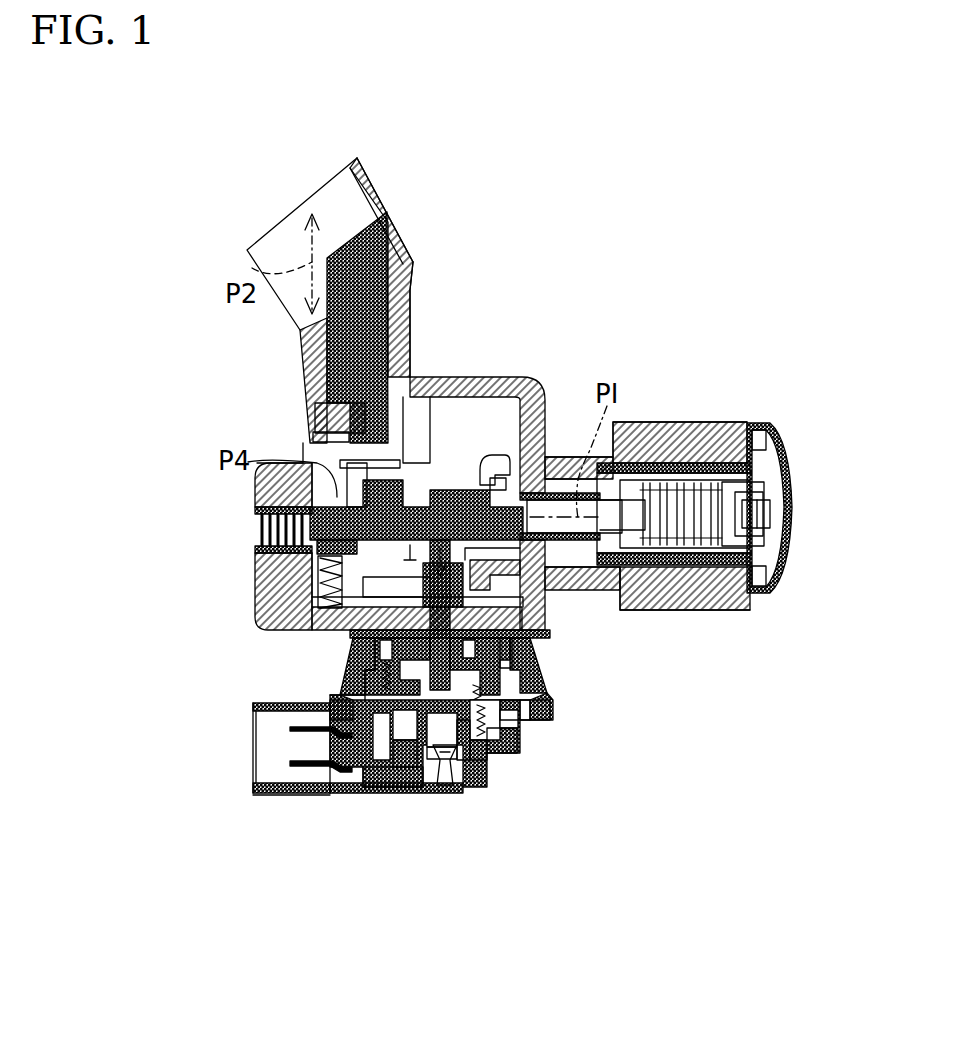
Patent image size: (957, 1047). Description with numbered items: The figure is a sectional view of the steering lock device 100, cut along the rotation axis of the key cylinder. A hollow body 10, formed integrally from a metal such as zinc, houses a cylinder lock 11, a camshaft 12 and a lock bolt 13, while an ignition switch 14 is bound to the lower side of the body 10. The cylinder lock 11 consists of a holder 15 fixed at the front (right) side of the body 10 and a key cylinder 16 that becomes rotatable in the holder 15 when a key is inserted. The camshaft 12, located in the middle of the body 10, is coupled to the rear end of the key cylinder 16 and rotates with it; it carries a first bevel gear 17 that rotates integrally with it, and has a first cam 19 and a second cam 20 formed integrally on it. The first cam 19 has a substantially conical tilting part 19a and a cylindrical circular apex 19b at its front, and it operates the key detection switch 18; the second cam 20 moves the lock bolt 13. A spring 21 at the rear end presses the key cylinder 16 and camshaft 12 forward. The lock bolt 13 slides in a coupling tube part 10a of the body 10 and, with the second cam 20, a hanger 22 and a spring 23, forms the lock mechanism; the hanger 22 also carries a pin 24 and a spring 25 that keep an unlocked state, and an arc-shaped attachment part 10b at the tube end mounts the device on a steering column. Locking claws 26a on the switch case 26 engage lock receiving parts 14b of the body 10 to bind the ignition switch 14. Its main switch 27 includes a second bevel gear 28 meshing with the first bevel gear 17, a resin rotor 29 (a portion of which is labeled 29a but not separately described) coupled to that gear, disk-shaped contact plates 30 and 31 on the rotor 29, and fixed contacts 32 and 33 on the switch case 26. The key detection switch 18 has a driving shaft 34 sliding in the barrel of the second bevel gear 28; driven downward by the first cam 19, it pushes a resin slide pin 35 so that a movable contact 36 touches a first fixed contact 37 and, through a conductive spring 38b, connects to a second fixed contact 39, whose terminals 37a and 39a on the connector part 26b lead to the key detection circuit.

The steering lock device 100 is at (560, 367).
The body 10 is at (528, 388).
The coupling tube part 10a is at (405, 290).
The attachment part 10b is at (298, 228).
The cylinder lock 11 is at (772, 425).
The camshaft 12 is at (443, 465).
The lock bolt 13 is at (316, 376).
The ignition switch 14 is at (350, 805).
The lock receiving parts 14b is at (337, 697).
The holder 15 is at (680, 465).
The key cylinder 16 is at (714, 612).
The first bevel gear 17 is at (518, 447).
The key detection switch 18 is at (429, 799).
The first cam 19 is at (455, 507).
The tilting part 19a is at (493, 460).
The circular apex 19b is at (527, 566).
The second cam 20 is at (418, 492).
The spring 21 is at (253, 526).
The hanger 22 is at (315, 441).
The spring 23 is at (257, 582).
The pin 24 is at (258, 623).
The spring 25 is at (256, 563).
The switch case 26 is at (503, 733).
The locking claws 26a is at (352, 664).
The connector part 26b is at (258, 797).
The main switch 27 is at (543, 725).
The second bevel gear 28 is at (545, 655).
The rotor 29 is at (548, 660).
The yoke tab 29a is at (533, 644).
The contact plate 30 is at (505, 705).
The contact plate 31 is at (485, 745).
The fixed contact 32 is at (325, 717).
The fixed contact 33 is at (420, 773).
The driving shaft 34 is at (350, 643).
The slide pin 35 is at (547, 712).
The movable contact 36 is at (440, 786).
The first fixed contact 37 is at (463, 760).
The terminal 37a is at (300, 737).
The conductive spring 38b is at (410, 787).
The second fixed contact 39 is at (455, 800).
The terminal 39a is at (297, 767).